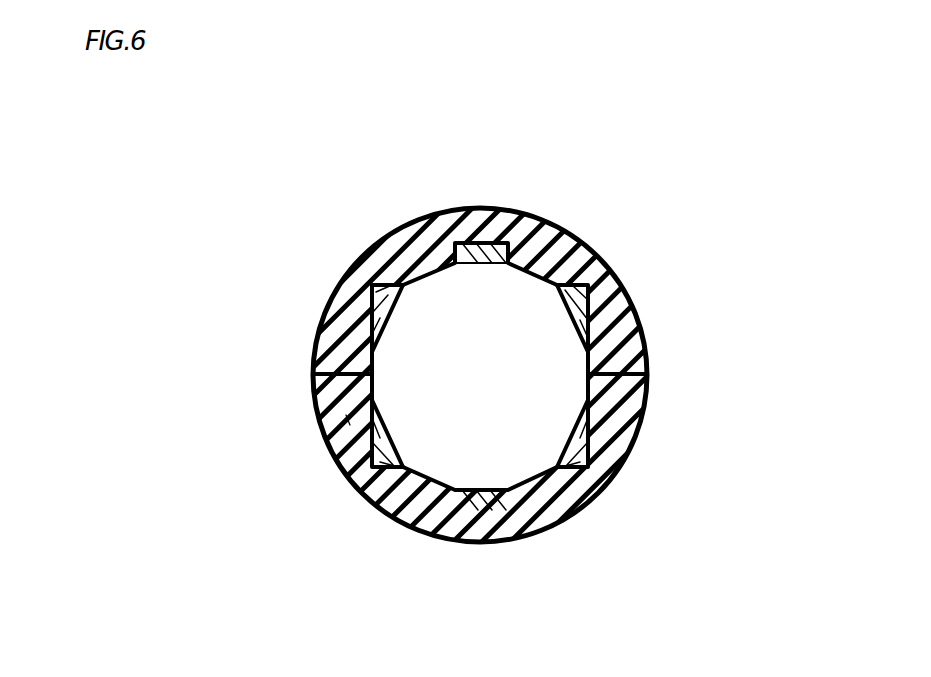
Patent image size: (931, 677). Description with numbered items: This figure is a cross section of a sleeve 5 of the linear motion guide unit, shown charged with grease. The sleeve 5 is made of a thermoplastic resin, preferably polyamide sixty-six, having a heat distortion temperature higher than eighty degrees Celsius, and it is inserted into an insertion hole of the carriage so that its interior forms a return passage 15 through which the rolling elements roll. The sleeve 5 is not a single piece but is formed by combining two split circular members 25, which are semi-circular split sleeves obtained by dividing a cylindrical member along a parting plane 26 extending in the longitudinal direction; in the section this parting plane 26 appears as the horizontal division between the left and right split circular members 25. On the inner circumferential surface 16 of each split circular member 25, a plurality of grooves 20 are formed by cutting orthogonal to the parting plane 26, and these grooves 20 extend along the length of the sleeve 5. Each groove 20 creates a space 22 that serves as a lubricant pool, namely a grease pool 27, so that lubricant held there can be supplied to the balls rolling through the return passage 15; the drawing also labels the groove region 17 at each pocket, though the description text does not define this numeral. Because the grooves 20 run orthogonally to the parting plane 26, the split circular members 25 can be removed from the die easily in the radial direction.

The sleeve 5 is at (481, 338).
The return passage 15 is at (495, 360).
The inner circumferential surface 16 is at (536, 228).
The pocket 17 is at (457, 243).
The groove 20 is at (480, 243).
The space 22 is at (358, 253).
The split circular member 25 is at (405, 250).
The parting plane 26 is at (318, 375).
The grease pool 27 is at (511, 372).